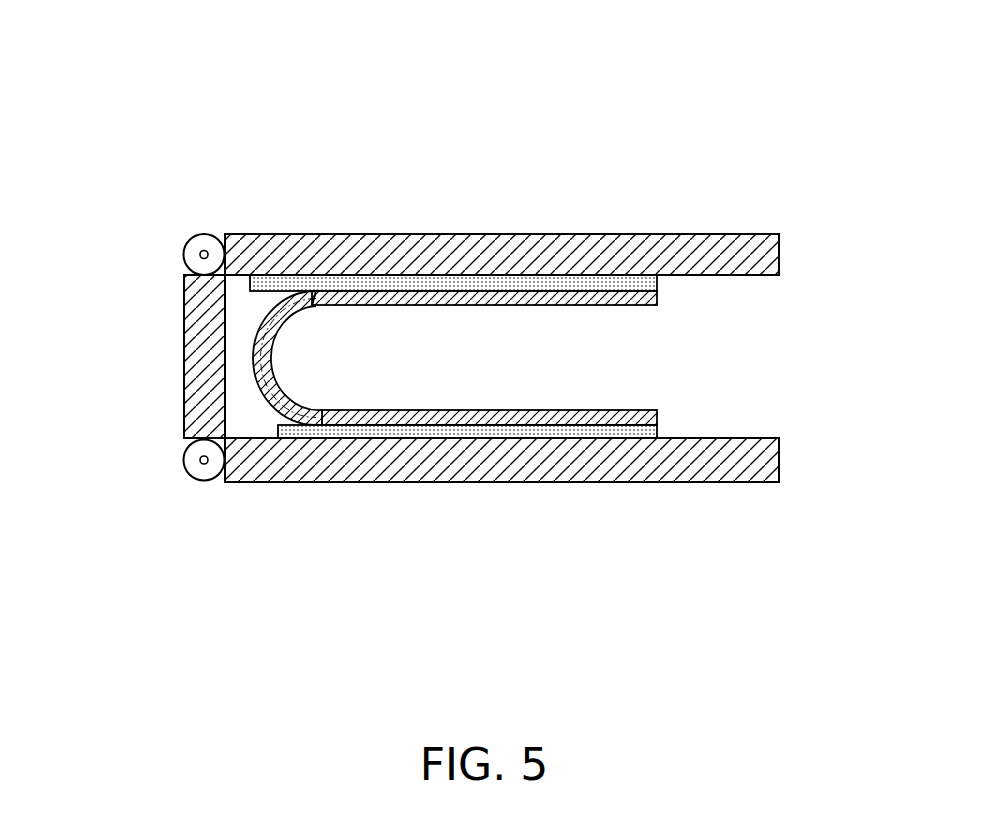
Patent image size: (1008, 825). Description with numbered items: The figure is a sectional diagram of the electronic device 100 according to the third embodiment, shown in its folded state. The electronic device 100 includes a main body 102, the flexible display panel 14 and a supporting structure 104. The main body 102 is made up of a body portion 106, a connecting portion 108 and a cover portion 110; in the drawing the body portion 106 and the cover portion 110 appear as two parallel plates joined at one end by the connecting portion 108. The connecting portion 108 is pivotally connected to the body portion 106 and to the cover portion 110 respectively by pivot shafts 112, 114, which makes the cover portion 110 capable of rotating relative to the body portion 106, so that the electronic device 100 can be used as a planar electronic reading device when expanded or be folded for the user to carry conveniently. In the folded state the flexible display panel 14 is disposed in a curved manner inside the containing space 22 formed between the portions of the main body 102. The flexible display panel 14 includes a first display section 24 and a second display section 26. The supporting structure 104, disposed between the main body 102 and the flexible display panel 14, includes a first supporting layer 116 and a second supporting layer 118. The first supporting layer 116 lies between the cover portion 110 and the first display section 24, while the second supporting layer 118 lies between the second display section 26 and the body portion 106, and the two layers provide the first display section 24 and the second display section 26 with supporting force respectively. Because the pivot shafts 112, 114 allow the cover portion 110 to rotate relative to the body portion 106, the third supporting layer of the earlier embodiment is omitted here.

The electronic device 100 is at (786, 78).
The containing space 22 is at (752, 336).
The main body 102 is at (125, 271).
The body portion 106 is at (255, 450).
The connecting portion 108 is at (195, 357).
The cover portion 110 is at (257, 263).
The pivot shaft 112 is at (203, 476).
The pivot shaft 114 is at (203, 240).
The supporting structure 104 is at (442, 187).
The first supporting layer 116 is at (415, 300).
The second supporting layer 118 is at (362, 432).
The flexible display panel 14 is at (625, 187).
The first display section 24 is at (608, 300).
The second display section 26 is at (538, 418).